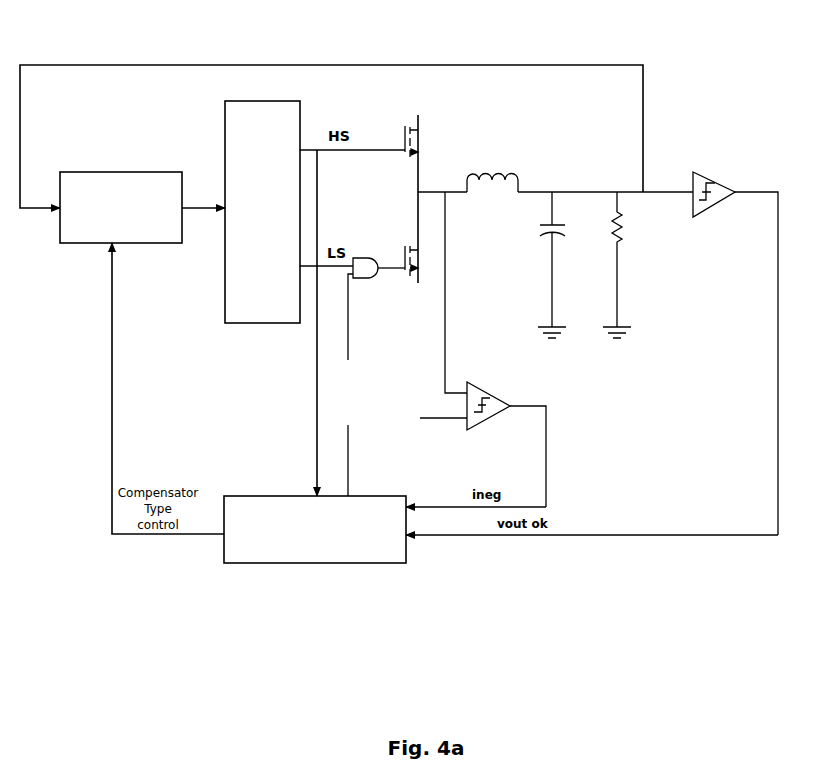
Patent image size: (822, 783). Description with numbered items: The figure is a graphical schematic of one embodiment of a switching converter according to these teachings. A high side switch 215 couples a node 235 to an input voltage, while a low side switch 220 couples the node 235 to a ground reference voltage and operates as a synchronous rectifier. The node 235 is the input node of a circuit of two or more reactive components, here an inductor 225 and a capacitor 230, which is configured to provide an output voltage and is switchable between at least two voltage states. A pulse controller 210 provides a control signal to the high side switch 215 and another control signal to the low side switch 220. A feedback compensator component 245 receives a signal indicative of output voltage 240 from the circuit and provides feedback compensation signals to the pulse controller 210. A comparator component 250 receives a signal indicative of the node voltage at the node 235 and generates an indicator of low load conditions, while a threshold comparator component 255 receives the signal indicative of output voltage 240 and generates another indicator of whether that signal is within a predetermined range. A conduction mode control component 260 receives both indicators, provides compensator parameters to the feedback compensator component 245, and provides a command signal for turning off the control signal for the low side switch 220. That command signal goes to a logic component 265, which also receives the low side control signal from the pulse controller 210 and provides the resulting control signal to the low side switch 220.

The pulse controller 210 is at (263, 94).
The high side switch 215 is at (425, 137).
The low side switch 220 is at (412, 282).
The inductor 225 is at (493, 193).
The capacitor 230 is at (535, 247).
The node 235 is at (430, 180).
The signal indicative of output voltage 240 is at (628, 207).
The feedback compensator component 245 is at (87, 165).
The comparator component 250 is at (492, 378).
The threshold comparator component 255 is at (737, 179).
The conduction mode control component 260 is at (370, 578).
The logic component 265 is at (370, 250).